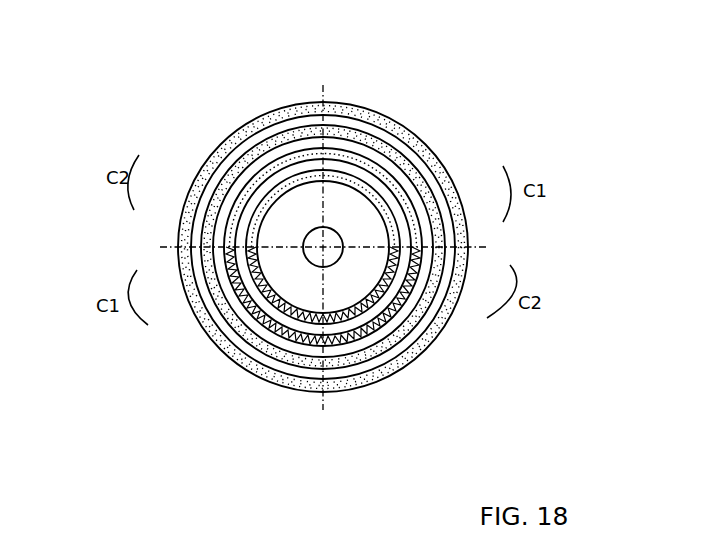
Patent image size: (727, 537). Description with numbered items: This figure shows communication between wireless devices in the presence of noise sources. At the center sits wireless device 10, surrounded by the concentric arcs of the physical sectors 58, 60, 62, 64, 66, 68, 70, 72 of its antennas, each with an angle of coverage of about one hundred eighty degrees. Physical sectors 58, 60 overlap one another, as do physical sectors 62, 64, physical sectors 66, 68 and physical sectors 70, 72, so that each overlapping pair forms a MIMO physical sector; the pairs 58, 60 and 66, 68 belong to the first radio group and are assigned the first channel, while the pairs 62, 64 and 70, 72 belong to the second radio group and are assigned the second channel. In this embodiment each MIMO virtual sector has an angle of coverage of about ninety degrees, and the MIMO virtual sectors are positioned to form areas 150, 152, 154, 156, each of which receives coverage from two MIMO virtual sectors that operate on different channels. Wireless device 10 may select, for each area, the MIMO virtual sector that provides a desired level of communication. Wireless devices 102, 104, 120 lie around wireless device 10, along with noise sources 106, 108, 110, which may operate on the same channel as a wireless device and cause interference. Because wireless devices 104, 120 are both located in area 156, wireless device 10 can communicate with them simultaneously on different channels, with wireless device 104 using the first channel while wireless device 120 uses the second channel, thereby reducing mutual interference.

The wireless device 10 is at (313, 257).
The physical sector 58 is at (400, 237).
The physical sector 60 is at (414, 207).
The physical sector 62 is at (185, 204).
The physical sector 64 is at (204, 178).
The physical sector 66 is at (250, 263).
The physical sector 68 is at (228, 292).
The physical sector 70 is at (443, 277).
The physical sector 72 is at (466, 270).
The wireless device 102 is at (472, 92).
The wireless device 104 is at (501, 420).
The noise source 106 is at (46, 132).
The noise source 108 is at (46, 388).
The noise source 110 is at (556, 58).
The wireless device 120 is at (427, 467).
The area 150 is at (416, 124).
The area 152 is at (183, 134).
The area 154 is at (178, 378).
The area 156 is at (421, 395).